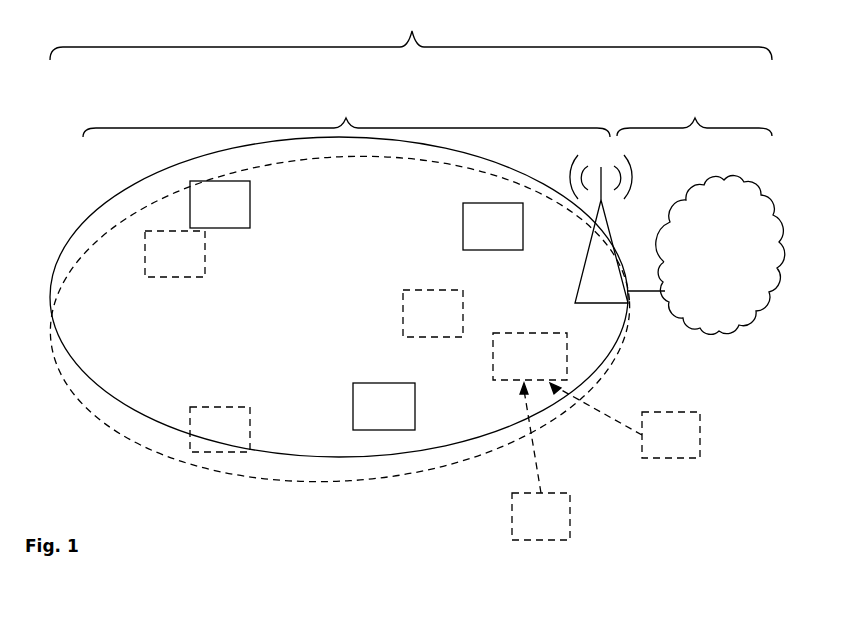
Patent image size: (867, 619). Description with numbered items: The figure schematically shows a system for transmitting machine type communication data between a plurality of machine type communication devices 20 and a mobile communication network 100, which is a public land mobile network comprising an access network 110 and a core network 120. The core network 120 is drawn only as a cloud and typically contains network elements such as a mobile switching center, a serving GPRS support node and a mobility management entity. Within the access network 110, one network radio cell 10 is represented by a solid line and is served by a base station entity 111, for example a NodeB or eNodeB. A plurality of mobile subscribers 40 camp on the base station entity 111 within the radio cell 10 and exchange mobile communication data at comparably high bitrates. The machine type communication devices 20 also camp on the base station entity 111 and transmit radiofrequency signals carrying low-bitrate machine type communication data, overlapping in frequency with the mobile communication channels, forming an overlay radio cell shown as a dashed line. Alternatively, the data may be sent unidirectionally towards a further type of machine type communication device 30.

The mobile communication network 100 is at (411, 33).
The access network 110 is at (339, 276).
The core network 120 is at (701, 214).
The network radio cell 10 is at (146, 417).
The base station entity 111 is at (601, 229).
The machine type communication devices 20 is at (422, 385).
The further type of machine type communication device 30 is at (530, 356).
The mobile subscribers 40 is at (356, 305).